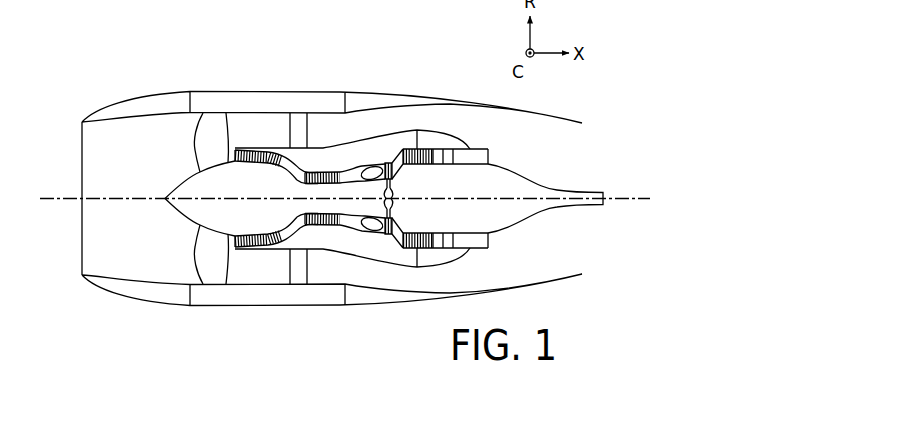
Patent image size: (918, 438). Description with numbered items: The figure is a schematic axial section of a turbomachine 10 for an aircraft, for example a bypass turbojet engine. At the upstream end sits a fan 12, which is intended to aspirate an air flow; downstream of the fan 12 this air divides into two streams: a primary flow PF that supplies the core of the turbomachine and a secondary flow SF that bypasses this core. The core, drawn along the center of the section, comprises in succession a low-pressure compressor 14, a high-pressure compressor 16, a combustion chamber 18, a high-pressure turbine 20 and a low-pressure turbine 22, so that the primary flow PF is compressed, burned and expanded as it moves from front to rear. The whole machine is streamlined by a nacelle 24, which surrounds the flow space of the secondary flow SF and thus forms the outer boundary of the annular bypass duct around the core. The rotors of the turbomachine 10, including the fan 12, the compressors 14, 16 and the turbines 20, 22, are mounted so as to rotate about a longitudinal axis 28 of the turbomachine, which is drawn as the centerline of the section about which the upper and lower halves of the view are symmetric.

The turbomachine 10 is at (191, 62).
The fan 12 is at (207, 247).
The low-pressure compressor 14 is at (247, 149).
The high-pressure compressor 16 is at (331, 170).
The combustion chamber 18 is at (374, 162).
The high-pressure turbine 20 is at (390, 159).
The low-pressure turbine 22 is at (438, 145).
The nacelle 24 is at (273, 97).
The longitudinal axis 28 is at (45, 197).
The secondary flow SF is at (255, 272).
The primary flow PF is at (306, 226).